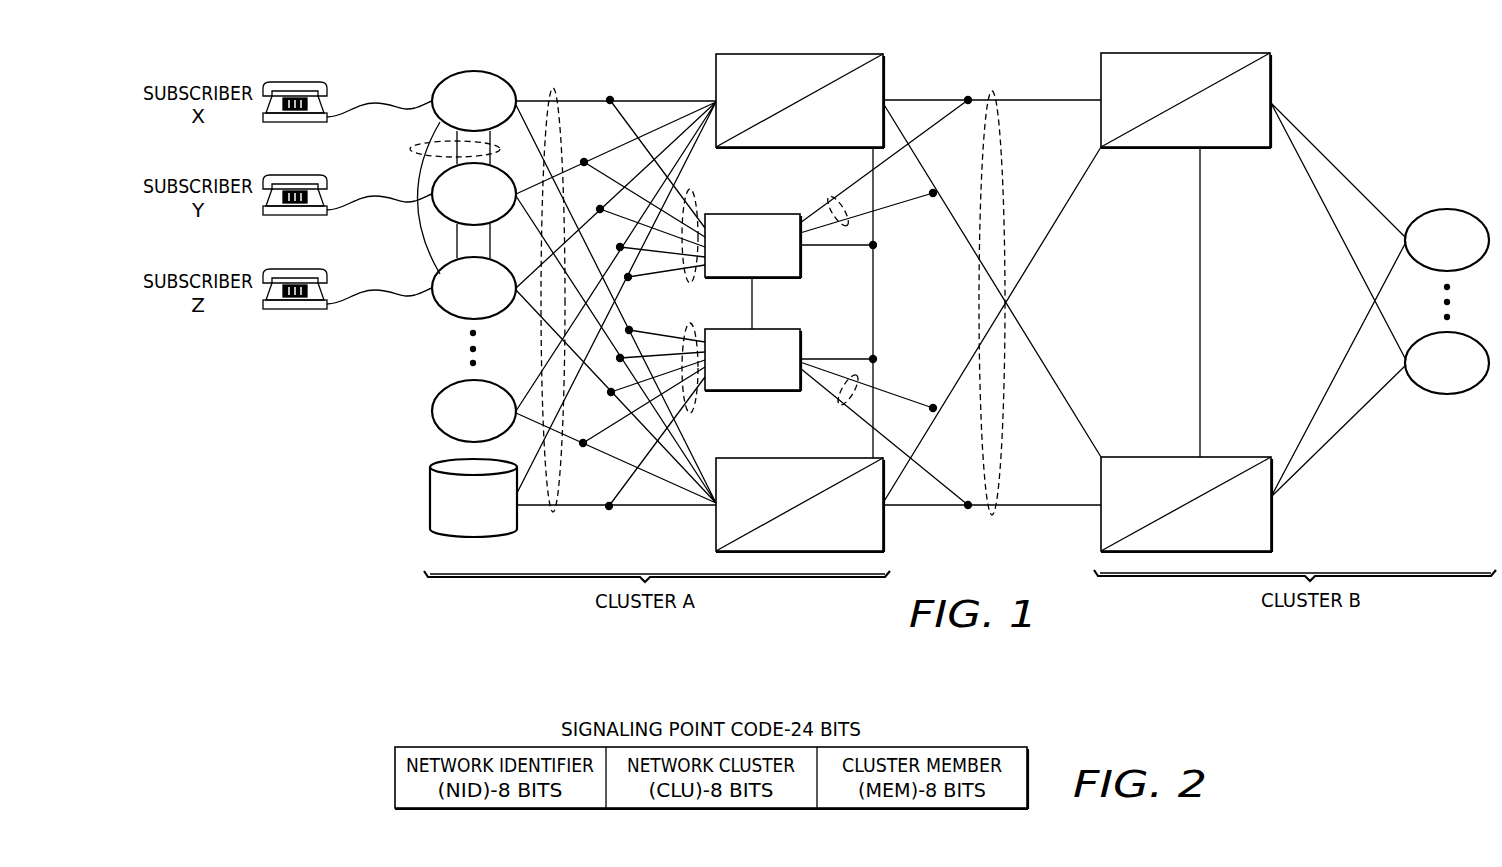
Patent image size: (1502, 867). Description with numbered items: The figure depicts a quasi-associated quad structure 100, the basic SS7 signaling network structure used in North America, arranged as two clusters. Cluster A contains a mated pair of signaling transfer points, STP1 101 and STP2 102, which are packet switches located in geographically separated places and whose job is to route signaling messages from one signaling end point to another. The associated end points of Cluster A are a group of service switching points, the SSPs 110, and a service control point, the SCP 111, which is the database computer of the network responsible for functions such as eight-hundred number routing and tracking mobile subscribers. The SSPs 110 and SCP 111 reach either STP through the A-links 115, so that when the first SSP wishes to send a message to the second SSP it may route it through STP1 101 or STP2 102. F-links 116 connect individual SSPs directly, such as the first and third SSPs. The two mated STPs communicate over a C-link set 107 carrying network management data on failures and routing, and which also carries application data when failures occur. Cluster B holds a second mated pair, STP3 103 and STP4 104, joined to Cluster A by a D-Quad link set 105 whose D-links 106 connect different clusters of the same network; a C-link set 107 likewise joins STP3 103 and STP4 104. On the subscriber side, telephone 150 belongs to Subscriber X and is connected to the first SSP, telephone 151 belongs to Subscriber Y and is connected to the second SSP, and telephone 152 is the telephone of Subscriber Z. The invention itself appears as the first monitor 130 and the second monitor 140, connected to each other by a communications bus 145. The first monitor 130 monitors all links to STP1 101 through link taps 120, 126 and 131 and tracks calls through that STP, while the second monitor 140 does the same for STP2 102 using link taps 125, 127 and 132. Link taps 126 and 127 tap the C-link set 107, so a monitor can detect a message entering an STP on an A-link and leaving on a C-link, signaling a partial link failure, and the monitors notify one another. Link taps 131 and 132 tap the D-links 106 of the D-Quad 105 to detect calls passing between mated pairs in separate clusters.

The quasi-associated quad structure 100 is at (1376, 61).
The STP1 101 is at (787, 53).
The STP2 102 is at (715, 531).
The STP3 103 is at (1200, 52).
The STP4 104 is at (1273, 528).
The D-Quad link set 105 is at (992, 90).
The D-links 106 is at (1058, 98).
The C-link set 107 is at (875, 300).
The SSPs 110 is at (473, 70).
The SCP 111 is at (428, 507).
The A-links 115 is at (550, 88).
The F-links 116 is at (410, 147).
The link taps 120 is at (696, 282).
The link taps 125 is at (690, 330).
The link tap 126 is at (834, 248).
The link tap 127 is at (837, 355).
The Monitor 1 130 is at (750, 212).
The link tap 131 is at (826, 198).
The link tap 132 is at (836, 403).
The Monitor 2 140 is at (750, 395).
The communications bus 145 is at (754, 313).
The telephone 150 is at (293, 80).
The telephone 151 is at (280, 177).
The telephone 152 is at (295, 313).